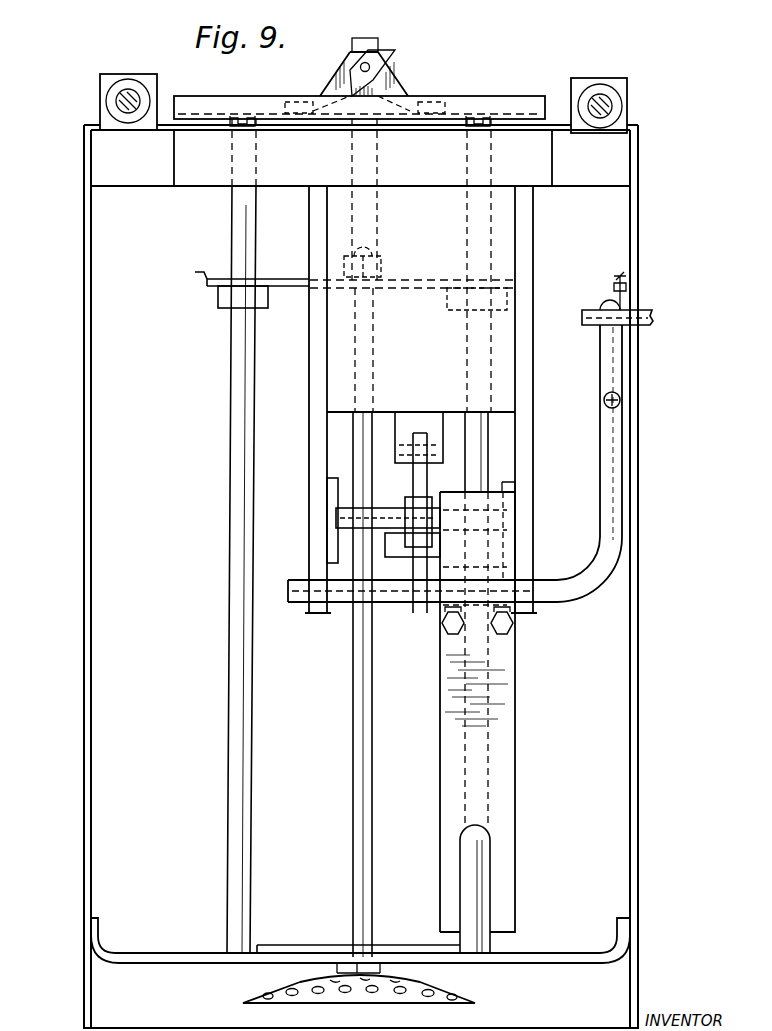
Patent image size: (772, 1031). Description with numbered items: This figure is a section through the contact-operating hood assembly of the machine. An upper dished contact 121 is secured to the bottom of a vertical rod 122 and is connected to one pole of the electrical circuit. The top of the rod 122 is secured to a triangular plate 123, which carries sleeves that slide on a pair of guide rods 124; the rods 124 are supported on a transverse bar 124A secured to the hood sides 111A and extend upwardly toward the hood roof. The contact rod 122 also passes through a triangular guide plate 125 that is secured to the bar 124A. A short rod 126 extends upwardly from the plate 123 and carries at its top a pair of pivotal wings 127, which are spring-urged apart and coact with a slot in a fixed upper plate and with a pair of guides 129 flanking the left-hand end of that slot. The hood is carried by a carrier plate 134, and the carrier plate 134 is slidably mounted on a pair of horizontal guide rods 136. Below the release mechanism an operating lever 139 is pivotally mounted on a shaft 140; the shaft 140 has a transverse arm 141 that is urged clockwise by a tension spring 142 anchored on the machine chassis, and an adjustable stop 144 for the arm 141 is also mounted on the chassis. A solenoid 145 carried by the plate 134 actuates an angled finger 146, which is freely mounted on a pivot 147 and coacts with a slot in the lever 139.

The hood sides 111A is at (84, 551).
The upper dished contact 121 is at (258, 993).
The vertical rod 122 is at (353, 731).
The triangular plate 123 is at (210, 279).
The guide rods 124 is at (229, 656).
The transverse bar 124A is at (561, 965).
The triangular guide plate 125 is at (312, 945).
The short rod 126 is at (370, 214).
The pivotal wings 127 is at (385, 58).
The guides 129 is at (302, 97).
The carrier plate 134 is at (546, 172).
The horizontal guide rods 136 is at (118, 103).
The operating lever 139 is at (507, 671).
The shaft 140 is at (566, 604).
The transverse arm 141 is at (606, 364).
The tension spring 142 is at (604, 402).
The adjustable stop 144 is at (590, 312).
The solenoid 145 is at (447, 347).
The angled finger 146 is at (422, 478).
The pivot 147 is at (382, 532).